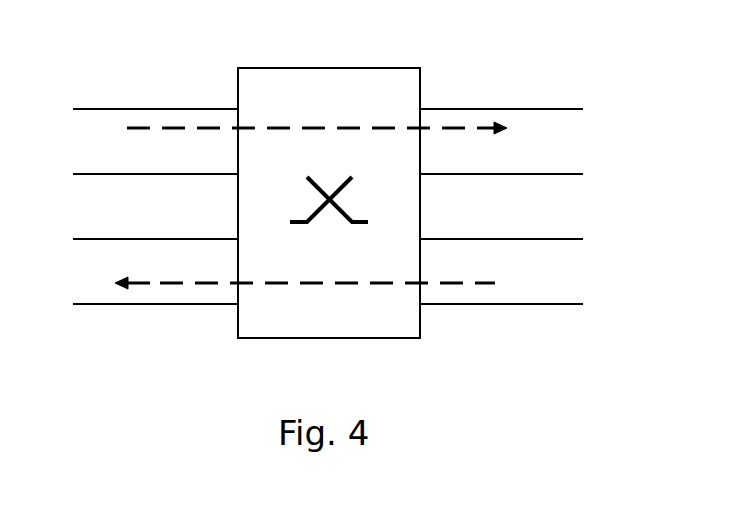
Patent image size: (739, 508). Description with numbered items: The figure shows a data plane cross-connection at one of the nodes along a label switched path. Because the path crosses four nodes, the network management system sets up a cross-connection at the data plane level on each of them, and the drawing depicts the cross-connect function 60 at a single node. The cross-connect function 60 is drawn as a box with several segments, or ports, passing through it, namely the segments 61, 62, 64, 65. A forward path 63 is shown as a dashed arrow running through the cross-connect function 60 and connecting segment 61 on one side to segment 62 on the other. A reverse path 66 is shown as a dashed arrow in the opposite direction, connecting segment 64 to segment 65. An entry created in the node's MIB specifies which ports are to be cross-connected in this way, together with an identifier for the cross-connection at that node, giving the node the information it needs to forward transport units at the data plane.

The cross-connect function 60 is at (332, 68).
The segment (port) 61 is at (137, 108).
The segment (port) 62 is at (505, 108).
The forward path 63 is at (218, 127).
The segment (port) 64 is at (500, 305).
The segment (port) 65 is at (130, 305).
The reverse path 66 is at (438, 285).